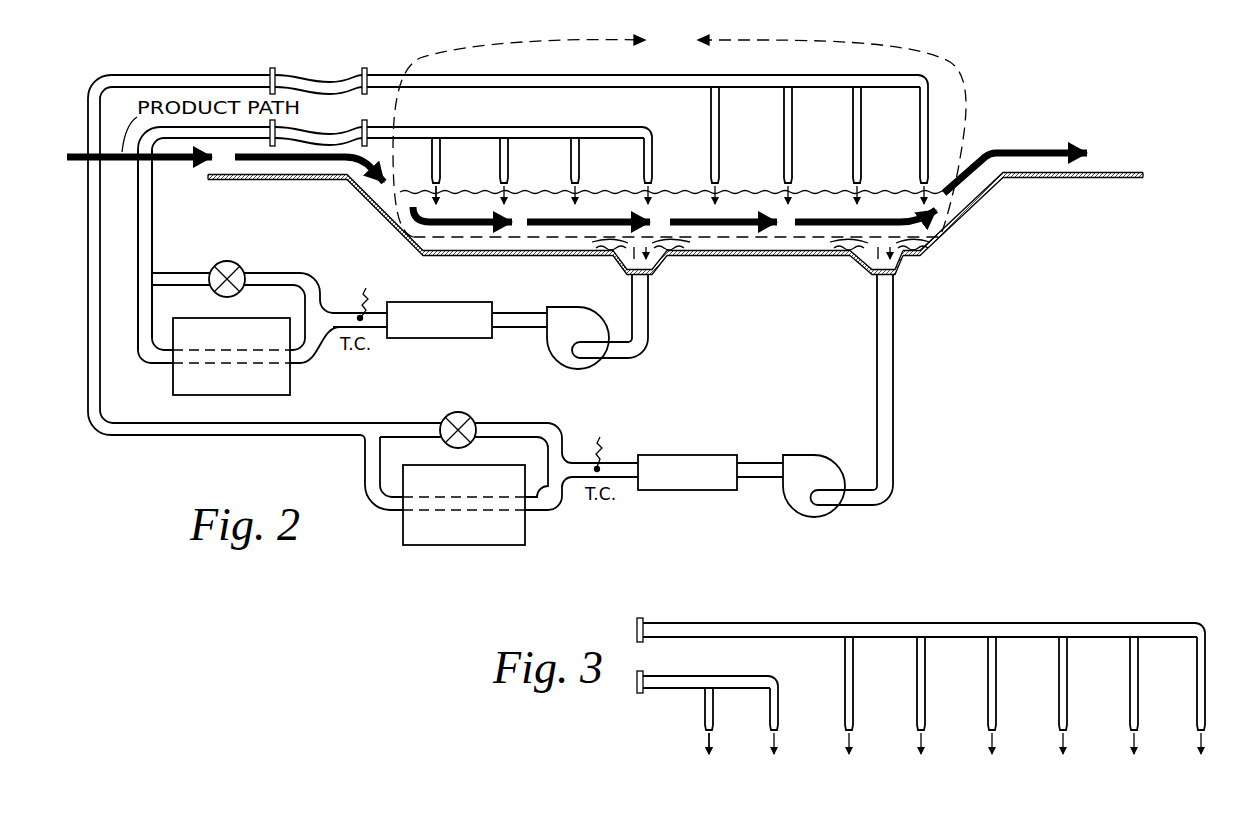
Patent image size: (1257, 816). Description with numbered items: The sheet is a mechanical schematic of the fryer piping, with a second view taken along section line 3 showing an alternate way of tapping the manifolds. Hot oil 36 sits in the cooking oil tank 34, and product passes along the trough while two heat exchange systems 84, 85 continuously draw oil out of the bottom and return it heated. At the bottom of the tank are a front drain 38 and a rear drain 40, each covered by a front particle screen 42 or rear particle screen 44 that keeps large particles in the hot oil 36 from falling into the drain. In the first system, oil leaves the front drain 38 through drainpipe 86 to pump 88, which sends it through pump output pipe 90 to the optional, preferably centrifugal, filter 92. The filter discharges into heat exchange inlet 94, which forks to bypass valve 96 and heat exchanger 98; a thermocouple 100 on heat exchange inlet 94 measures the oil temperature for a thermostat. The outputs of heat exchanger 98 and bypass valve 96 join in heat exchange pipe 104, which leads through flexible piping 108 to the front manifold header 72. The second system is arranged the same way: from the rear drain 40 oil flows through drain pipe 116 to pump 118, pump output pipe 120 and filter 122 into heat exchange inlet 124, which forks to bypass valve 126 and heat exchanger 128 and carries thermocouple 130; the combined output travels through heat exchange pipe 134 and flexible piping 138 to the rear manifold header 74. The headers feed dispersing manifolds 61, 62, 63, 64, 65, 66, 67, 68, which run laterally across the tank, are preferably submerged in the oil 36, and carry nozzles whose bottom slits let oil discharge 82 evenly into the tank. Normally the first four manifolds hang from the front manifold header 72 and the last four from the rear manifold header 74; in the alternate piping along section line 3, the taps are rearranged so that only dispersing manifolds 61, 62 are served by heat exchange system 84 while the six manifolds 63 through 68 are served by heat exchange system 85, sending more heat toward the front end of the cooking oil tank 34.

In FIG. 2, the section line 3— 3 is at (679, 133).
In FIG. 2, the cooking oil tank 34 is at (957, 228).
In FIG. 2, the hot oil 36 is at (738, 212).
In FIG. 2, the front drain 38 is at (656, 272).
In FIG. 2, the rear drain 40 is at (872, 277).
In FIG. 2, the front particle screen 42 is at (665, 260).
In FIG. 2, the rear particle screen 44 is at (862, 257).
In FIG. 2, the dispersing manifold 61 is at (441, 165).
In FIG. 3, the dispersing manifold 61 is at (714, 716).
In FIG. 2, the dispersing manifold 62 is at (509, 165).
In FIG. 3, the dispersing manifold 62 is at (779, 712).
In FIG. 2, the dispersing manifold 63 is at (580, 165).
In FIG. 3, the dispersing manifold 63 is at (855, 688).
In FIG. 2, the dispersing manifold 64 is at (653, 167).
In FIG. 3, the dispersing manifold 64 is at (927, 688).
In FIG. 2, the dispersing manifold 65 is at (729, 130).
In FIG. 3, the dispersing manifold 65 is at (998, 688).
In FIG. 2, the dispersing manifold 66 is at (793, 140).
In FIG. 3, the dispersing manifold 66 is at (1069, 688).
In FIG. 2, the dispersing manifold 67 is at (862, 140).
In FIG. 3, the dispersing manifold 67 is at (1140, 688).
In FIG. 2, the dispersing manifold 68 is at (929, 140).
In FIG. 3, the dispersing manifold 68 is at (1207, 688).
In FIG. 3, the front manifold header 72 is at (727, 675).
In FIG. 2, the rear manifold header 74 is at (694, 74).
In FIG. 3, the rear manifold header 74 is at (883, 623).
In FIG. 2, the oil discharge 82 is at (440, 201).
In FIG. 3, the oil discharge 82 is at (711, 740).
In FIG. 2, the heat exchange system 84 is at (348, 257).
In FIG. 2, the heat exchange system 85 is at (778, 399).
In FIG. 2, the drainpipe 86 is at (637, 340).
In FIG. 2, the pump 88 is at (593, 334).
In FIG. 2, the pump output pipe 90 is at (510, 313).
In FIG. 2, the filter 92 is at (443, 340).
In FIG. 2, the heat exchange inlet 94 is at (310, 354).
In FIG. 2, the bypass valve 96 is at (237, 266).
In FIG. 2, the heat exchanger 98 is at (253, 318).
In FIG. 2, the thermocouple 100 is at (362, 316).
In FIG. 2, the heat exchange pipe 104 is at (139, 223).
In FIG. 2, the flexible piping 108 is at (312, 132).
In FIG. 2, the drain pipe 116 is at (891, 440).
In FIG. 2, the pump 118 is at (833, 485).
In FIG. 2, the pump output pipe 120 is at (758, 463).
In FIG. 2, the filter 122 is at (672, 453).
In FIG. 2, the heat exchange inlet 124 is at (550, 503).
In FIG. 2, the bypass valve 126 is at (472, 417).
In FIG. 2, the heat exchanger 128 is at (479, 465).
In FIG. 2, the thermocouple 130 is at (600, 470).
In FIG. 2, the heat exchange pipe 134 is at (110, 437).
In FIG. 2, the flexible piping 138 is at (308, 79).